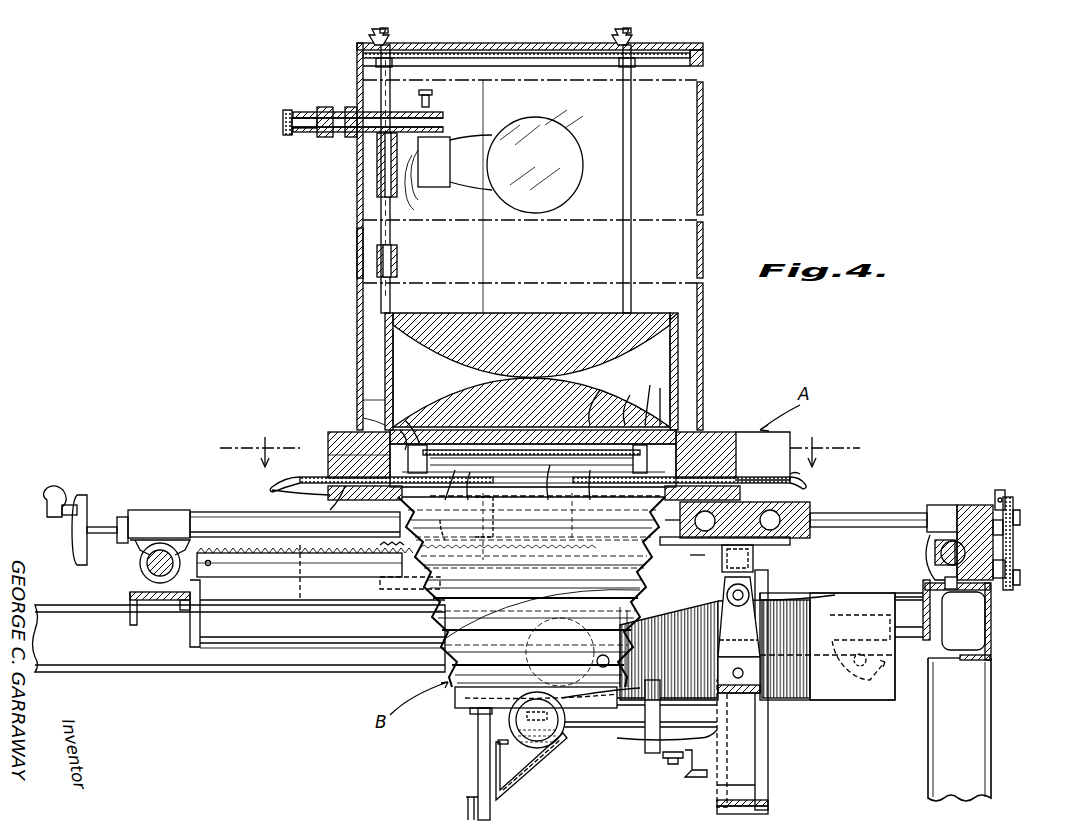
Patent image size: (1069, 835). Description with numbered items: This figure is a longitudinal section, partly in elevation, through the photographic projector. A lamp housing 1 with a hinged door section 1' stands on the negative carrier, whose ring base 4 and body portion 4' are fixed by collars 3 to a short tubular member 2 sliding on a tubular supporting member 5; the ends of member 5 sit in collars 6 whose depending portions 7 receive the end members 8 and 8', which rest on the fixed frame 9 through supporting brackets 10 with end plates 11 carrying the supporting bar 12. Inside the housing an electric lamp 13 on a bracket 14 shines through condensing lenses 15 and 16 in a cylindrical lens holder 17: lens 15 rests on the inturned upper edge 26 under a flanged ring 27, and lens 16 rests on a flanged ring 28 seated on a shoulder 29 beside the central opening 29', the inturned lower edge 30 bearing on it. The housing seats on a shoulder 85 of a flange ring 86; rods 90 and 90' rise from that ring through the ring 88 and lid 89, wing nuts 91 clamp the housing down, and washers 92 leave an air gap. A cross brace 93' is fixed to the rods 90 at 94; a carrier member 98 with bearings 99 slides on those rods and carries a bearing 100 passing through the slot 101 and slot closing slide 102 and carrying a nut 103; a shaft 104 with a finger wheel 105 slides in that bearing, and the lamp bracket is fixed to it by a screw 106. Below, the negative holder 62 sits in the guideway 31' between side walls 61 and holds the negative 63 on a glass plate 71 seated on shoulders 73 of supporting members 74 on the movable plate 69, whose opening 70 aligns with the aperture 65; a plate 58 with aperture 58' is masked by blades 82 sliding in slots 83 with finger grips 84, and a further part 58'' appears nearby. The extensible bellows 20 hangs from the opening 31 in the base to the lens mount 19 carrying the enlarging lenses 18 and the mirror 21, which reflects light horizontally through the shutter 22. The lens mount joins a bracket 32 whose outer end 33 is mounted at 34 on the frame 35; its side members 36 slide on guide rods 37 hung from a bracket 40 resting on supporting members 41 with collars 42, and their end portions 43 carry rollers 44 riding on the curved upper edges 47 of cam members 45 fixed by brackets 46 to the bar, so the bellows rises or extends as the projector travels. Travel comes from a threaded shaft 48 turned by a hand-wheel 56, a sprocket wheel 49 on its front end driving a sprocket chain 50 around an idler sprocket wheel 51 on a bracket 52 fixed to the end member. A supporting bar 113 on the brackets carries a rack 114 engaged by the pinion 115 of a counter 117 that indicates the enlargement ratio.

The lamp housing 1 is at (508, 236).
The door section 1' is at (712, 256).
The short tubular member 2 is at (668, 512).
The collars 3 is at (430, 560).
The ring base 4 is at (542, 494).
The body portion 4' is at (534, 454).
The tubular supporting member 5 is at (912, 513).
The collars 6 is at (148, 520).
The transversely extending portions 7 is at (140, 548).
The end member 8 is at (986, 547).
The end member 8' is at (144, 606).
The fixed frame 9 is at (991, 618).
The supporting brackets 10 is at (130, 592).
The end plates 11 is at (943, 640).
The supporting bar 12 is at (448, 420).
The electric lamp 13 is at (516, 161).
The lamp bracket 14 is at (450, 147).
The upper condensing lens 15 is at (531, 318).
The lower condensing lens 16 is at (635, 390).
The cylindrical lens holder 17 is at (678, 355).
The projection enlarging lenses 18 is at (495, 740).
The lens mount 19 is at (568, 728).
The extensible bellows 20 is at (450, 640).
The image projecting prism or mirror 21 is at (530, 775).
The shutter 22 is at (472, 774).
The inturned upper edge 26 is at (385, 343).
The flanged ring 27 is at (678, 315).
The flanged ring 28 is at (385, 405).
The shoulder 29 is at (541, 440).
The central opening 29' is at (428, 413).
The inturned lower edge 30 is at (385, 380).
The opening 31 is at (513, 484).
The guideway 31' is at (478, 449).
The bracket 32 is at (648, 752).
The outer end 33 is at (727, 738).
The mounting point 34 is at (755, 786).
The frame 35 is at (775, 769).
The side members 36 is at (770, 695).
The guide rods 37 is at (766, 543).
The bracket 40 is at (807, 505).
The supporting members 41 is at (705, 545).
The collars 42 is at (680, 548).
The end portions 43 is at (748, 628).
The rollers 44 is at (748, 600).
The cam members 45 is at (833, 610).
The brackets 46 is at (455, 690).
The curved upper edges 47 is at (835, 595).
The threaded shaft 48 is at (110, 517).
The sprocket wheel 49 is at (1003, 492).
The sprocket chain 50 is at (1005, 528).
The idler sprocket wheel 51 is at (1005, 568).
The bracket 52 is at (1013, 505).
The hand-wheel 56 is at (77, 553).
The plate 58 is at (279, 492).
The aperture 58' is at (788, 466).
The strip 58'' is at (477, 517).
The side walls 61 is at (432, 520).
The negative holder 62 is at (635, 399).
The negative 63 is at (599, 395).
The central aperture 65 is at (466, 488).
The movable plate 69 is at (405, 430).
The central opening 70 is at (551, 484).
The glass plate 71 is at (442, 487).
The shoulders 73 is at (591, 487).
The supporting members 74 is at (656, 390).
The adjustable blades 82 is at (300, 470).
The slots 83 is at (336, 512).
The finger grip members 84 is at (272, 483).
The shoulder 85 is at (385, 420).
The flange ring 86 is at (760, 412).
The ring 88 is at (703, 62).
The lid 89 is at (703, 47).
The rods 90 is at (350, 179).
The rods 90' is at (644, 179).
The wing nuts 91 is at (392, 42).
The washers 92 is at (360, 53).
The cross brace 93' is at (348, 265).
The mounting point 94 is at (377, 257).
The carrier member 98 is at (377, 170).
The bearings 99 is at (388, 185).
The bearing 100 is at (375, 135).
The slot 101 is at (352, 107).
The slot closing slide 102 is at (357, 238).
The nut 103 is at (322, 107).
The shaft 104 is at (283, 120).
The finger-engaging wheel 105 is at (288, 134).
The screw 106 is at (428, 97).
The supporting bar 113 is at (215, 570).
The rack 114 is at (295, 560).
The pinion 115 is at (350, 562).
The counter 117 is at (395, 577).